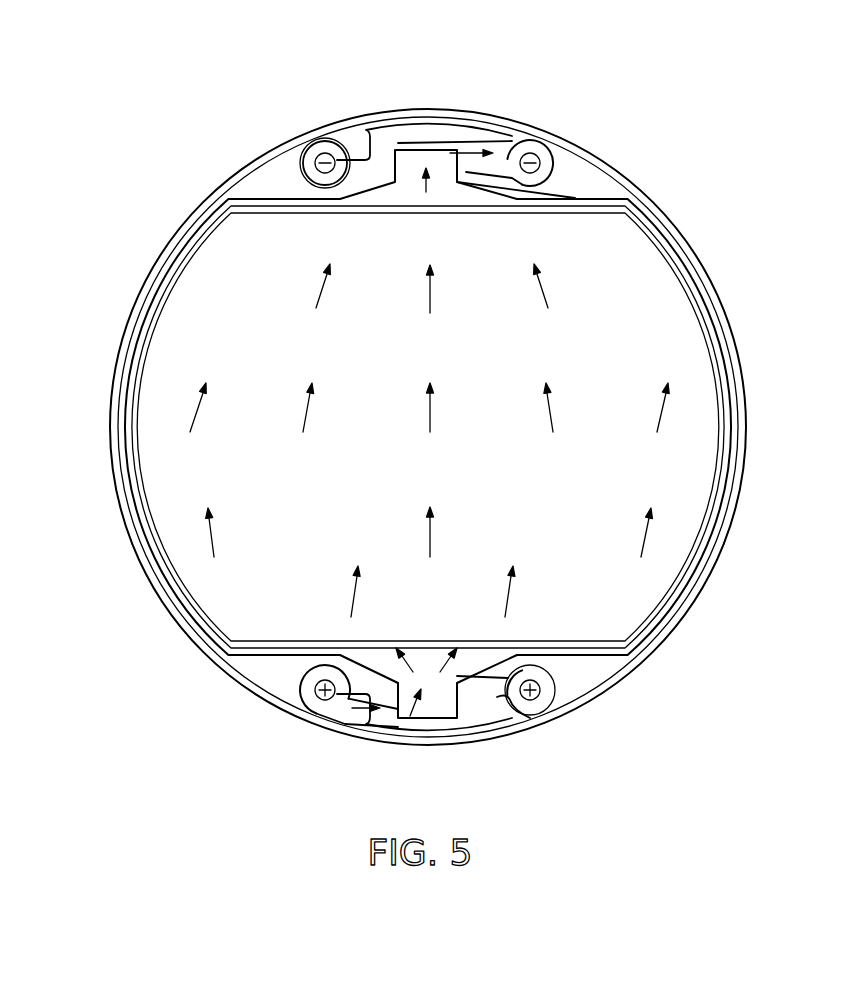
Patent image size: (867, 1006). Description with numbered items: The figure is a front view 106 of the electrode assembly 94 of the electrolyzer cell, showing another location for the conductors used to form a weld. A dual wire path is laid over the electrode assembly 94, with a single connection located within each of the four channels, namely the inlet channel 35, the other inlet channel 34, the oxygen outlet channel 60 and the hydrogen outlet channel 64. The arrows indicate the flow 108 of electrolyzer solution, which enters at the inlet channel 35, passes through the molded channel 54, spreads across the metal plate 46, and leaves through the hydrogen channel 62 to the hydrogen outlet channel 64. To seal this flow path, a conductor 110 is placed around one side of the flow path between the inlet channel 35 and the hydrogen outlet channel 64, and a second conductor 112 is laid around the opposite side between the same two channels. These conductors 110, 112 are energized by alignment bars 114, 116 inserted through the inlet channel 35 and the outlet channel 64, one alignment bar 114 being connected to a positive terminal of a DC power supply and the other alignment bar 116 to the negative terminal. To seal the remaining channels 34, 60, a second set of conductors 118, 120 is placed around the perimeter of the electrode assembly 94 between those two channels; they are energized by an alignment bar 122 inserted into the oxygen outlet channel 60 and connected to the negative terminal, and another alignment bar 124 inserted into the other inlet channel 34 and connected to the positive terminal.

The front view 106 is at (165, 105).
The inlet channel 34 is at (318, 142).
The alignment bar 124 is at (328, 140).
The hydrogen channel 62 is at (432, 163).
The alignment bar 116 is at (468, 150).
The hydrogen outlet channel 64 is at (540, 152).
The electrode assembly 94 is at (603, 176).
The conductor 118 is at (656, 205).
The conductor 110 is at (692, 248).
The metal plate 46 is at (212, 268).
The second conductor 112 is at (128, 385).
The conductor 120 is at (131, 433).
The flow 108 is at (429, 193).
The inlet channel 35 is at (302, 688).
The alignment bar 114 is at (326, 700).
The molded channel 54 is at (428, 724).
The alignment bar 122 is at (526, 704).
The oxygen outlet channel 60 is at (555, 694).